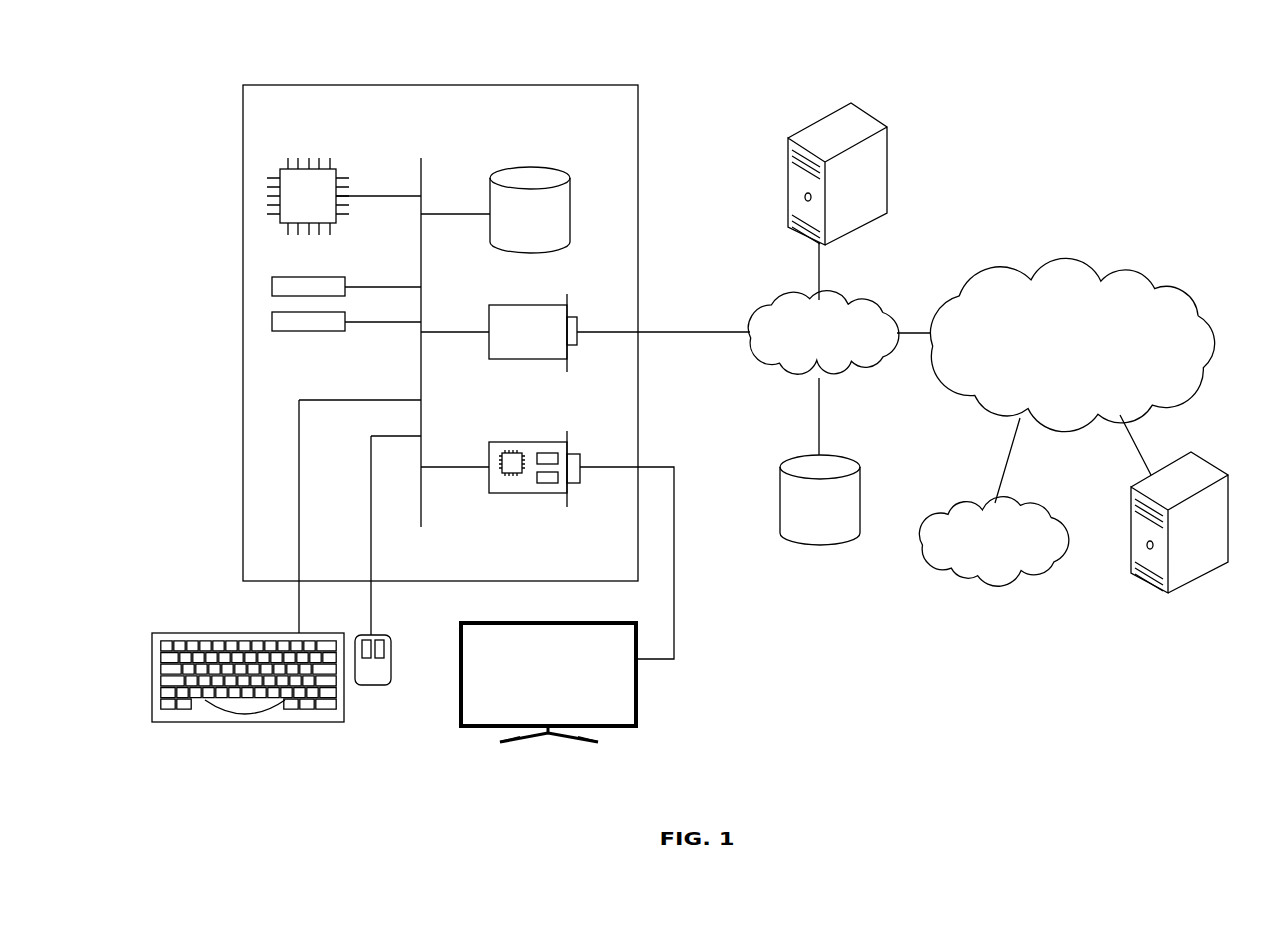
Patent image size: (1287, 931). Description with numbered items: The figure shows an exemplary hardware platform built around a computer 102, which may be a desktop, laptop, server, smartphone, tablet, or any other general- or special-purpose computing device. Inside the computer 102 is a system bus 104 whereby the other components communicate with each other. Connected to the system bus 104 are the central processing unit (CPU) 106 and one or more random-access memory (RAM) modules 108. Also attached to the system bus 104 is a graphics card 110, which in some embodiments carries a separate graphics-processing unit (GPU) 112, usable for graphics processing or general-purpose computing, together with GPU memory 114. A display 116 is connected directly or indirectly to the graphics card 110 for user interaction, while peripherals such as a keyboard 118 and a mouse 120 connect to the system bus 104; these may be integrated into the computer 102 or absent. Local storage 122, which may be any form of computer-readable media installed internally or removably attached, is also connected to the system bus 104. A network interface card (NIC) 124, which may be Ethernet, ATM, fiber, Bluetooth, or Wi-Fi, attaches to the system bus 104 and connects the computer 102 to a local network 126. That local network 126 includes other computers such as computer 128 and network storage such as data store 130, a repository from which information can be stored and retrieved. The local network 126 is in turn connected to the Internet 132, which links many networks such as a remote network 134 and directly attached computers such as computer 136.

The computer 102 is at (597, 85).
The system bus 104 is at (421, 170).
The central processing unit (CPU) 106 is at (332, 167).
The random-access memory (RAM) modules 108 is at (345, 286).
The graphics card 110 is at (547, 529).
The graphics-processing unit (GPU) 112 is at (510, 475).
The GPU memory 114 is at (545, 487).
The display 116 is at (640, 708).
The keyboard 118 is at (250, 722).
The mouse 120 is at (370, 686).
The local storage 122 is at (570, 195).
The network interface card (NIC) 124 is at (489, 315).
The local network 126 is at (878, 292).
The computer 128 is at (870, 114).
The data store 130 is at (852, 457).
The Internet 132 is at (1117, 258).
The remote network 134 is at (1045, 497).
The computer 136 is at (1203, 459).